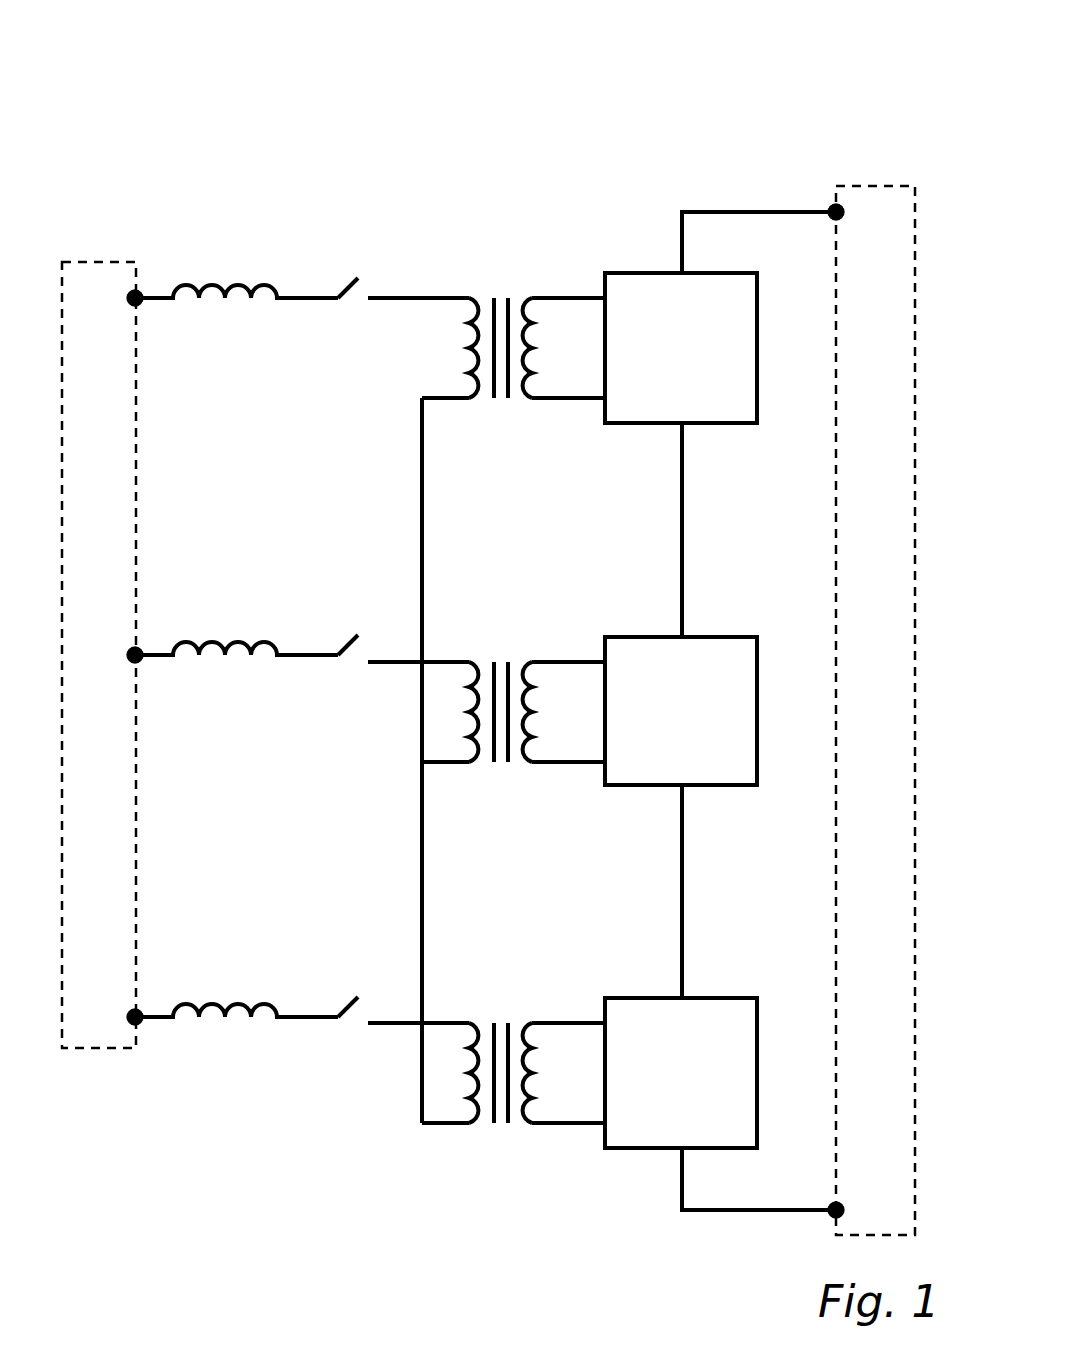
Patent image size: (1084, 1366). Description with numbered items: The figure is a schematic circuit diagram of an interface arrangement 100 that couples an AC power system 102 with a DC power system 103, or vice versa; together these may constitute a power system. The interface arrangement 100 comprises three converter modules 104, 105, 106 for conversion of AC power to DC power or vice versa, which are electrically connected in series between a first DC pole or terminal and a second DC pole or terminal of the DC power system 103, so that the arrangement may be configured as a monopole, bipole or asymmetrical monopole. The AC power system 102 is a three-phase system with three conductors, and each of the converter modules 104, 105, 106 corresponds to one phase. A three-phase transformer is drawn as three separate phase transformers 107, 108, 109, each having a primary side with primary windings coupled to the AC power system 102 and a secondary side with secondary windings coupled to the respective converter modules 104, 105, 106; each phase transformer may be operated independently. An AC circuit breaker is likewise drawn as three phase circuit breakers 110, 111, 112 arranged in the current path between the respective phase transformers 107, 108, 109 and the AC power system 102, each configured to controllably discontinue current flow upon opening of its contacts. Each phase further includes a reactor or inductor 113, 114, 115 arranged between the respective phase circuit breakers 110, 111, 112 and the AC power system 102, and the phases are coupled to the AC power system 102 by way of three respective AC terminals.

The interface arrangement 100 is at (150, 115).
The AC power system 102 is at (105, 262).
The DC power system 103 is at (872, 186).
The converter module 104 is at (645, 273).
The converter module 105 is at (645, 637).
The converter module 106 is at (645, 998).
The phase transformer 107 is at (492, 276).
The phase transformer 108 is at (492, 633).
The phase transformer 109 is at (492, 995).
The phase circuit breaker 110 is at (358, 310).
The phase circuit breaker 111 is at (358, 667).
The phase circuit breaker 112 is at (358, 1029).
The reactor or inductor 113 is at (215, 278).
The reactor or inductor 114 is at (215, 635).
The reactor or inductor 115 is at (215, 997).